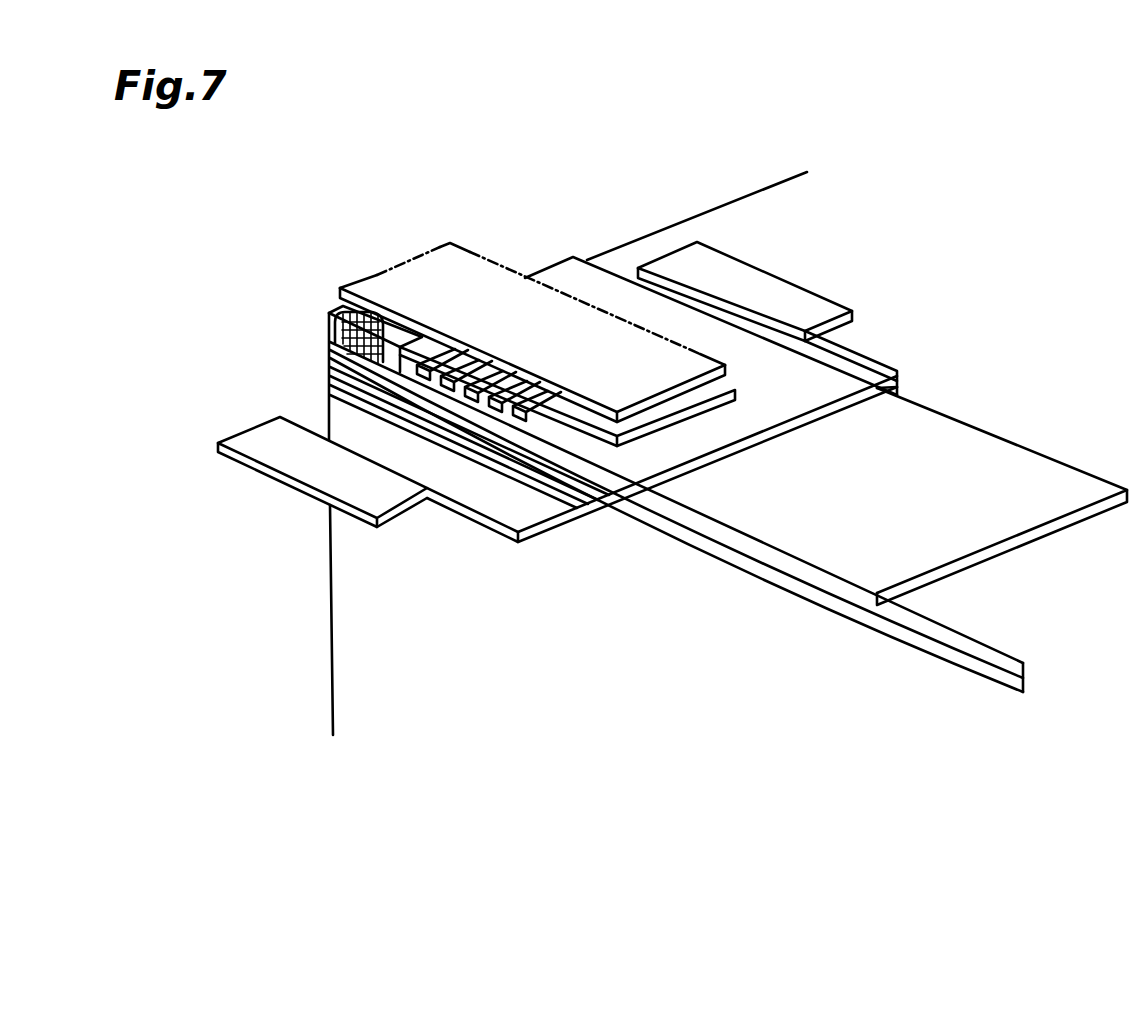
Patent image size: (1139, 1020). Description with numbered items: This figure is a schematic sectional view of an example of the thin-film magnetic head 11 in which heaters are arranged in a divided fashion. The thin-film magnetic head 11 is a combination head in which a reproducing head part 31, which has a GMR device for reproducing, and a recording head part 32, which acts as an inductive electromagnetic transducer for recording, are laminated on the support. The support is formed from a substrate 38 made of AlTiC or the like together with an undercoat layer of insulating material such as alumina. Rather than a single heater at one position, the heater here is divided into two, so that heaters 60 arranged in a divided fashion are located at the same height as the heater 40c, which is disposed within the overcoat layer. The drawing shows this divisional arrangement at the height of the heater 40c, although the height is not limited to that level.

The thin-film magnetic head 11 is at (584, 150).
The reproducing head part 31 is at (328, 378).
The recording head part 32 is at (328, 324).
The substrate 38 is at (468, 667).
The heater 40c is at (490, 290).
The heaters 60 is at (760, 297).